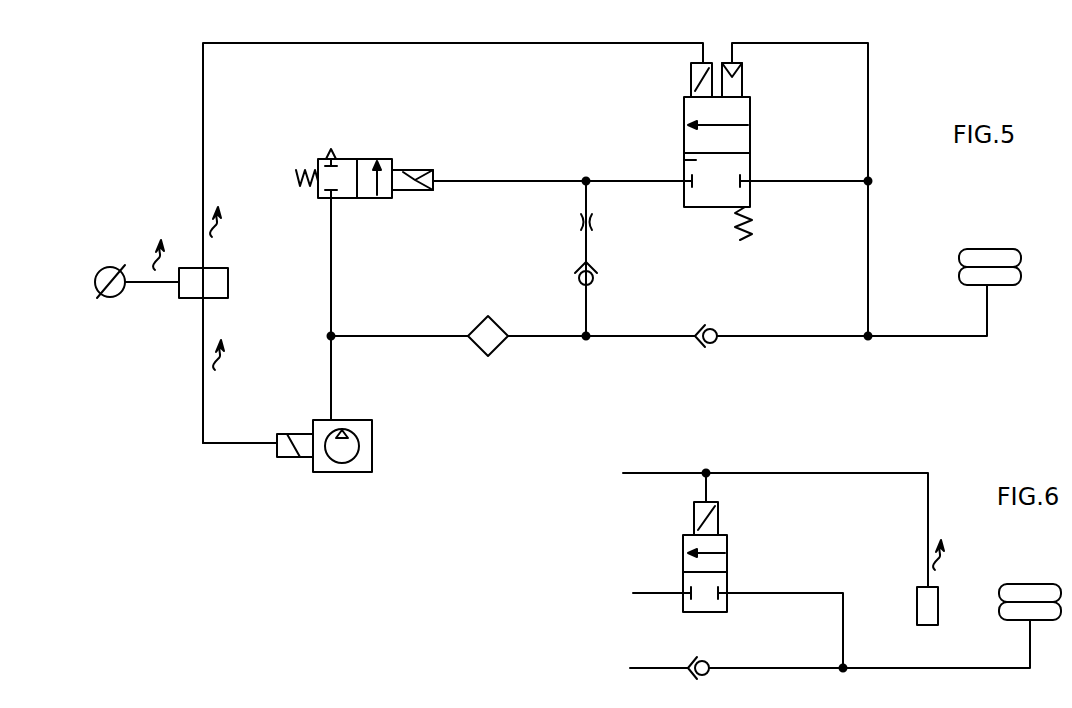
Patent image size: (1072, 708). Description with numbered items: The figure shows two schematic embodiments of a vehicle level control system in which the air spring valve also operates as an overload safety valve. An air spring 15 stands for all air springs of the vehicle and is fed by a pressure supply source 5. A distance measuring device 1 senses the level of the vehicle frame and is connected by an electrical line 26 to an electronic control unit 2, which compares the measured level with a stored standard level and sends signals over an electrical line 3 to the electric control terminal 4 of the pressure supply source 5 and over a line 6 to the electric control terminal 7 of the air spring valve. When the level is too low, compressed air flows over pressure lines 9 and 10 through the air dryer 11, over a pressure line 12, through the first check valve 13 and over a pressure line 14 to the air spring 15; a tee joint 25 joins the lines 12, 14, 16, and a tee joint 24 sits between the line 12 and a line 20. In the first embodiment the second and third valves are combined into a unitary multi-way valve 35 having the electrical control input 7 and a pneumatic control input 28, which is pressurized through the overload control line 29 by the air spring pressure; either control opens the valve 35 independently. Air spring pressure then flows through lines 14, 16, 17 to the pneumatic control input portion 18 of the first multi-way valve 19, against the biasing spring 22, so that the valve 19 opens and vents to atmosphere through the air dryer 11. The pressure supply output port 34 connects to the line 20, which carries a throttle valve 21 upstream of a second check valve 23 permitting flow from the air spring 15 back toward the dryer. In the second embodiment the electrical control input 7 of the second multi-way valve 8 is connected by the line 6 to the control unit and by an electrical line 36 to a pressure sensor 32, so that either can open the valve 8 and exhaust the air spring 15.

In FIG. 5, the distance measuring device 1 is at (99, 275).
In FIG. 5, the electronic control unit 2 is at (219, 281).
In FIG. 5, the electrical line 3 is at (203, 378).
In FIG. 5, the electric control terminal 4 is at (289, 459).
In FIG. 5, the pressure supply source 5 is at (373, 460).
In FIG. 5, the electrical line 6 is at (203, 147).
In FIG. 6, the electrical line 6 is at (655, 473).
In FIG. 5, the electric control terminal 7 is at (692, 72).
In FIG. 6, the electric control terminal 7 is at (699, 511).
In FIG. 6, the second multi-way valve 8 is at (693, 579).
In FIG. 5, the pressure line 9 is at (331, 373).
In FIG. 5, the pressure line 10 is at (406, 336).
In FIG. 5, the air dryer 11 is at (499, 346).
In FIG. 5, the pressure line 12 is at (634, 336).
In FIG. 5, the first check valve 13 is at (692, 347).
In FIG. 5, the pressure line 14 is at (917, 336).
In FIG. 6, the pressure line 14 is at (930, 668).
In FIG. 5, the air spring 15 is at (988, 252).
In FIG. 6, the air spring 15 is at (1030, 590).
In FIG. 5, the pressure line 16 is at (868, 255).
In FIG. 6, the pressure line 16 is at (843, 633).
In FIG. 5, the pressure line 17 is at (510, 181).
In FIG. 5, the pneumatic control input portion 18 is at (416, 172).
In FIG. 5, the first multi-way valve 19 is at (365, 192).
In FIG. 5, the line 20 is at (586, 198).
In FIG. 5, the throttle valve 21 is at (582, 226).
In FIG. 5, the biasing spring 22 is at (299, 172).
In FIG. 5, the second check valve 23 is at (593, 266).
In FIG. 5, the tee joint 24 is at (586, 354).
In FIG. 5, the tee joint 25 is at (868, 336).
In FIG. 5, the electrical line 26 is at (148, 282).
In FIG. 5, the pneumatic control input 28 is at (742, 81).
In FIG. 5, the pressure line 29 is at (868, 75).
In FIG. 6, the pressure sensor 32 is at (921, 594).
In FIG. 5, the pressure supply output port 34 is at (684, 182).
In FIG. 5, the multi-way valve 35 is at (684, 164).
In FIG. 6, the electrical line 36 is at (823, 473).